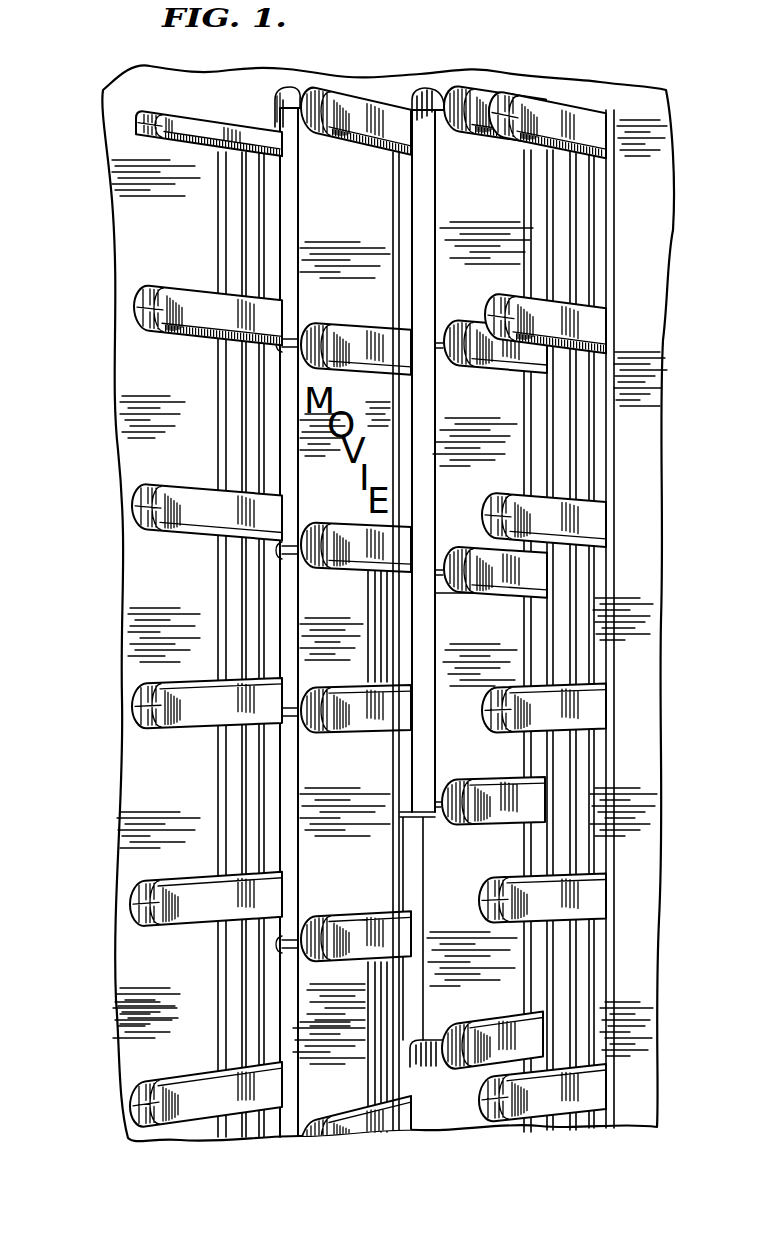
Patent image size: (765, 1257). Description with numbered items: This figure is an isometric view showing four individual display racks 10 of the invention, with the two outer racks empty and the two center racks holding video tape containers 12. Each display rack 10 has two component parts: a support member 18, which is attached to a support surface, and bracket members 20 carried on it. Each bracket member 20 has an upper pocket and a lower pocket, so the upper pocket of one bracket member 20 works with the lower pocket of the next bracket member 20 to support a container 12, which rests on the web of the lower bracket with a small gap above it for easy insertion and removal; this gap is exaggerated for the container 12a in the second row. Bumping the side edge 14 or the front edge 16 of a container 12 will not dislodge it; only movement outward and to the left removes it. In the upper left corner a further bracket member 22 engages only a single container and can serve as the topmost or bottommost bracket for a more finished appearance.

The display rack 10 is at (170, 484).
The video tape container 12 is at (284, 255).
The container 12a is at (481, 612).
The side edge 14 is at (288, 212).
The front edge 16 is at (348, 150).
The support member 18 is at (226, 206).
The bracket member 20 is at (182, 318).
The further bracket member 22 is at (147, 128).